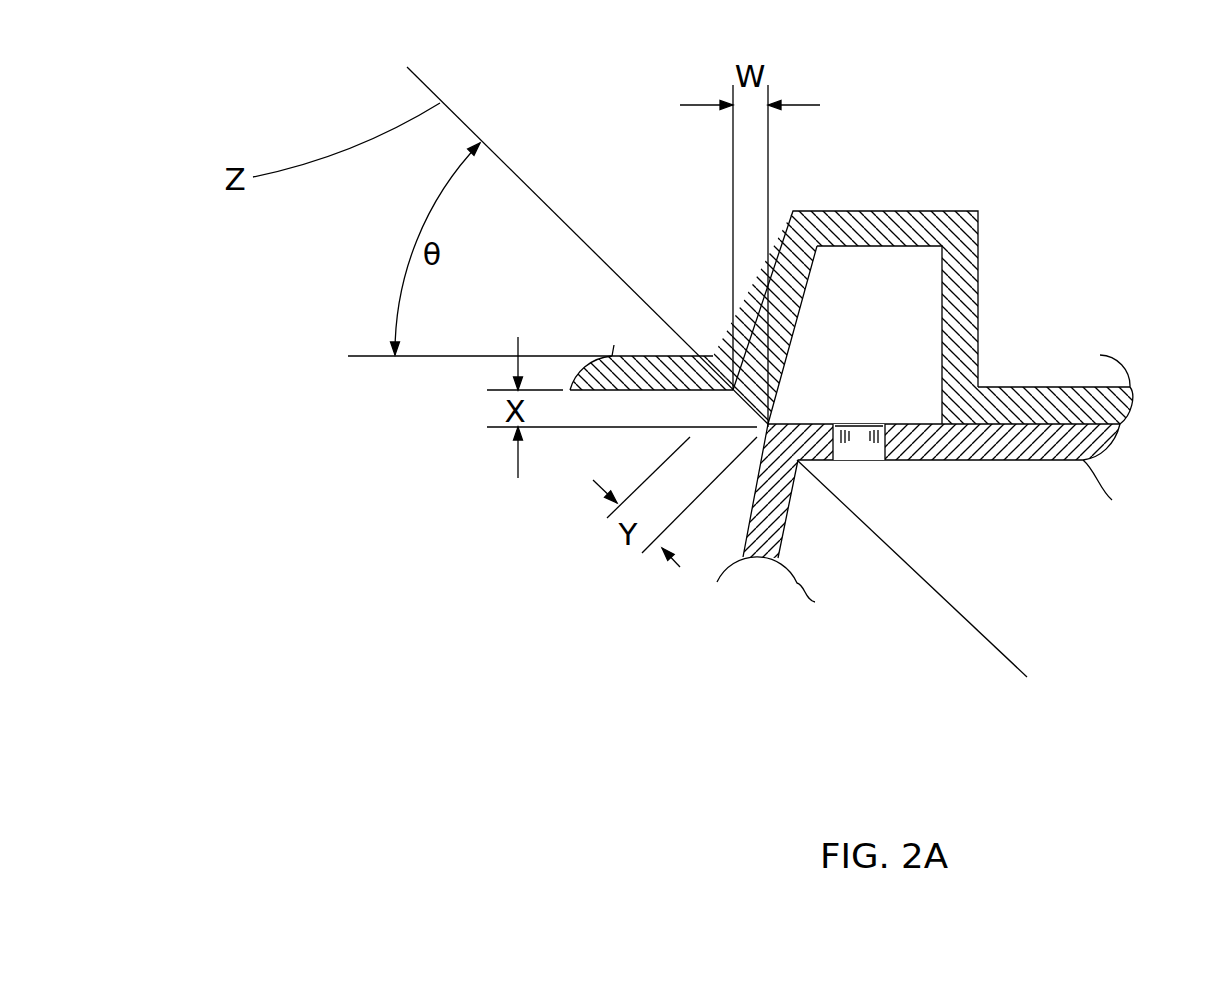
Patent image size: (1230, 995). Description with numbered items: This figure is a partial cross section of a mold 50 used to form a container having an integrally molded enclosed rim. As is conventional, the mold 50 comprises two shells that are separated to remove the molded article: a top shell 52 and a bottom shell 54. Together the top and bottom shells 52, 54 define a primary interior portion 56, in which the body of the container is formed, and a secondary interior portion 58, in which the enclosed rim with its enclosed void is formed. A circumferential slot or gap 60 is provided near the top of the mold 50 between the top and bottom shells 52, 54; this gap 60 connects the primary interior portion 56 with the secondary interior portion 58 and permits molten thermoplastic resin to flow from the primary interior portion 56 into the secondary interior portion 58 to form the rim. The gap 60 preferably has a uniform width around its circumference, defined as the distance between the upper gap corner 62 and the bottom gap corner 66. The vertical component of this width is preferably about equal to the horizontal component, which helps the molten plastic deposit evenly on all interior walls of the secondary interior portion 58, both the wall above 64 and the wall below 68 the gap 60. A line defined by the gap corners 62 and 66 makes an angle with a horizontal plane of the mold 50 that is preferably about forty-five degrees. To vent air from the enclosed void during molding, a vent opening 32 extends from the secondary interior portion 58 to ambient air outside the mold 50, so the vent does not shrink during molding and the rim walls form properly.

The mold 50 is at (665, 200).
The top shell 52 is at (1033, 385).
The bottom shell 54 is at (1053, 460).
The primary interior portion 56 is at (487, 600).
The secondary interior portion 58 is at (890, 317).
The gap 60 is at (718, 448).
The upper gap corner 62 is at (712, 353).
The interior wall above the gap 64 is at (800, 277).
The bottom gap corner 66 is at (800, 462).
The interior wall below the gap 68 is at (813, 423).
The vent opening 32 is at (868, 445).